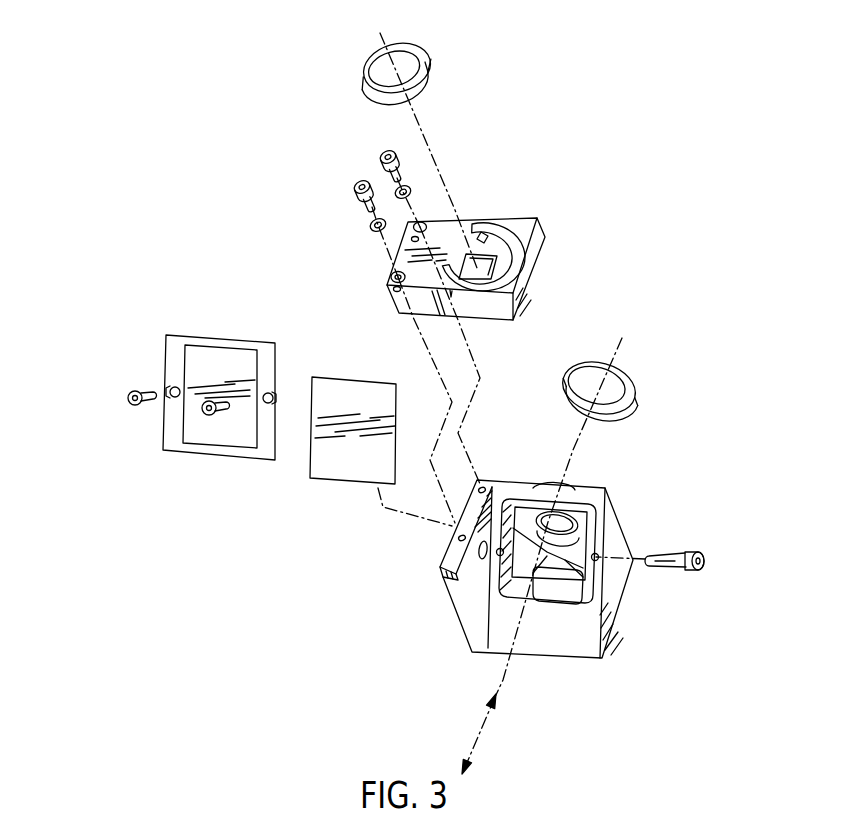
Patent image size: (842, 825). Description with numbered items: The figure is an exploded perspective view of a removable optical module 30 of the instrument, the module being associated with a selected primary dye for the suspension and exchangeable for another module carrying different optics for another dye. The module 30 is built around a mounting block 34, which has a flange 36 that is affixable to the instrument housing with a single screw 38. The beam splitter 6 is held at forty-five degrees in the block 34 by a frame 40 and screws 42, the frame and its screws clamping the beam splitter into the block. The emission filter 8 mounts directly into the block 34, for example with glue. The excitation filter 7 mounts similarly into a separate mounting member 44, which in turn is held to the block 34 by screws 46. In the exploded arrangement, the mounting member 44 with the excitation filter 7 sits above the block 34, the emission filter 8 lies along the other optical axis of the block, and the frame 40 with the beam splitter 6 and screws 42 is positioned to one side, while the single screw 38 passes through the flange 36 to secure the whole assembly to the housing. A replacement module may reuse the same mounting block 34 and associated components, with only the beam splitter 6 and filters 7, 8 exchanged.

The beam splitter 6 is at (362, 392).
The excitation filter 7 is at (433, 76).
The emission filter 8 is at (628, 377).
The module 30 is at (613, 229).
The mounting block 34 is at (520, 563).
The flange 36 is at (443, 556).
The screw 38 is at (681, 555).
The frame 40 is at (233, 341).
The screws 42 is at (204, 412).
The mounting member 44 is at (525, 270).
The screws 46 is at (380, 152).